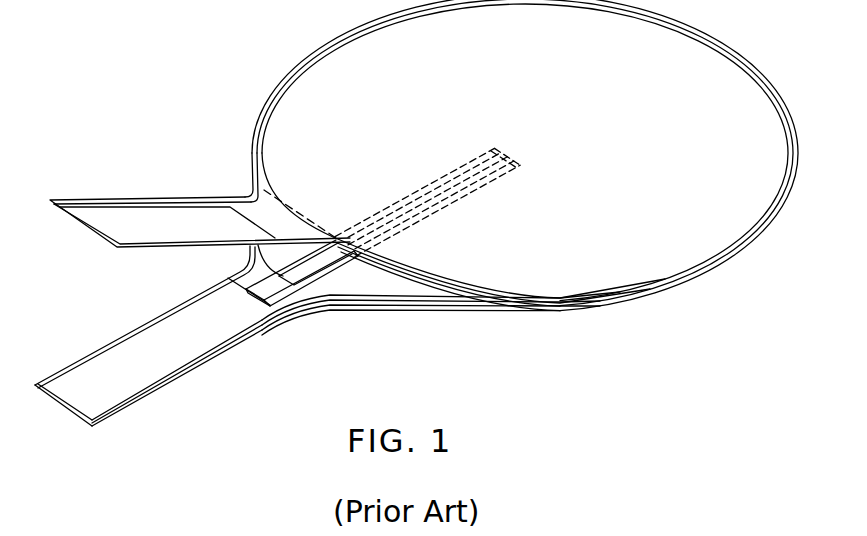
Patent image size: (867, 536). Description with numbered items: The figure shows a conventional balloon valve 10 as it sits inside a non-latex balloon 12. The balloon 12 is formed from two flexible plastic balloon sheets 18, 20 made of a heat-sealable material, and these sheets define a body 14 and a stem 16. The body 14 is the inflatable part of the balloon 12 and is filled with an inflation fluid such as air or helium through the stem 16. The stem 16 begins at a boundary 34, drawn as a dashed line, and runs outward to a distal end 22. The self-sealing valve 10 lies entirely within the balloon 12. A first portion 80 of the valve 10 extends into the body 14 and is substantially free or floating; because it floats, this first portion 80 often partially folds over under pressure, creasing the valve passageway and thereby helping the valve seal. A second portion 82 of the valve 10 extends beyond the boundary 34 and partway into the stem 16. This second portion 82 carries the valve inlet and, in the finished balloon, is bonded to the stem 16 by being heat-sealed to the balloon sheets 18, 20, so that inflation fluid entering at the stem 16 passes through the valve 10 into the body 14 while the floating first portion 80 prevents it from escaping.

The balloon valve 10 is at (440, 184).
The non-latex balloon 12 is at (233, 74).
The body 14 is at (712, 272).
The stem 16 is at (150, 402).
The balloon sheet 18 is at (112, 197).
The balloon sheet 20 is at (86, 354).
The distal end 22 is at (62, 412).
The boundary 34 is at (283, 210).
The first portion 80 is at (478, 192).
The second portion 82 is at (287, 302).